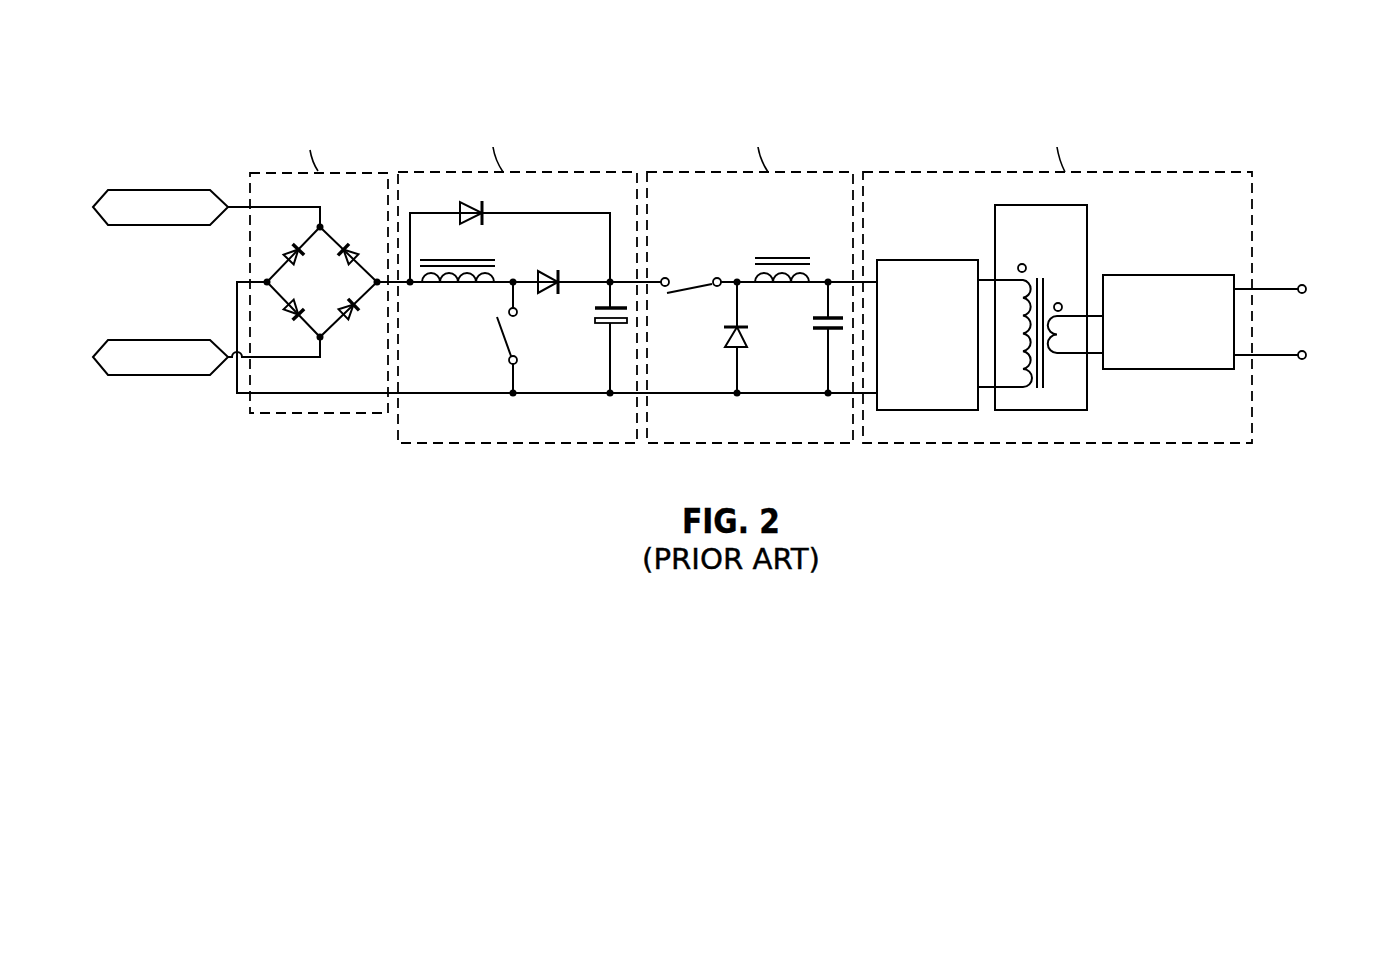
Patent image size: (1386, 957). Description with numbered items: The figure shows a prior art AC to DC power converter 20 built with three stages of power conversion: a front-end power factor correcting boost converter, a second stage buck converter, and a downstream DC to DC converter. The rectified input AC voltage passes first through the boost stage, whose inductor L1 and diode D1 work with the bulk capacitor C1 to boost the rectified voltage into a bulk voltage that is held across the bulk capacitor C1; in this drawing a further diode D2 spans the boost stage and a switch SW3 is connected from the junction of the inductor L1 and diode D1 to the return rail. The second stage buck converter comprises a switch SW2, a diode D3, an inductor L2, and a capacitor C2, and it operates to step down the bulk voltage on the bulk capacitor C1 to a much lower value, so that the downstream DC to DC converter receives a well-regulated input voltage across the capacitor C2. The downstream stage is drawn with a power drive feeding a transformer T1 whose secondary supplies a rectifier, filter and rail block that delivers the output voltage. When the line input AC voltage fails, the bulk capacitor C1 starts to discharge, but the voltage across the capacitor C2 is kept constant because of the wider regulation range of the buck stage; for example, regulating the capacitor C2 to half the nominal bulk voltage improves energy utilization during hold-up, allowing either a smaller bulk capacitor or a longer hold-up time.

The AC to DC power converter 20 is at (1249, 70).
The diode D1 is at (547, 268).
The bypass diode D2 is at (510, 234).
The diode D3 is at (721, 337).
The inductor L1 is at (457, 256).
The inductor L2 is at (782, 254).
The bulk capacitor C1 is at (605, 337).
The capacitor C2 is at (821, 337).
The switch SW2 is at (691, 270).
The PFC boost switch SW3 is at (527, 337).
The transformer T1 is at (1040, 307).